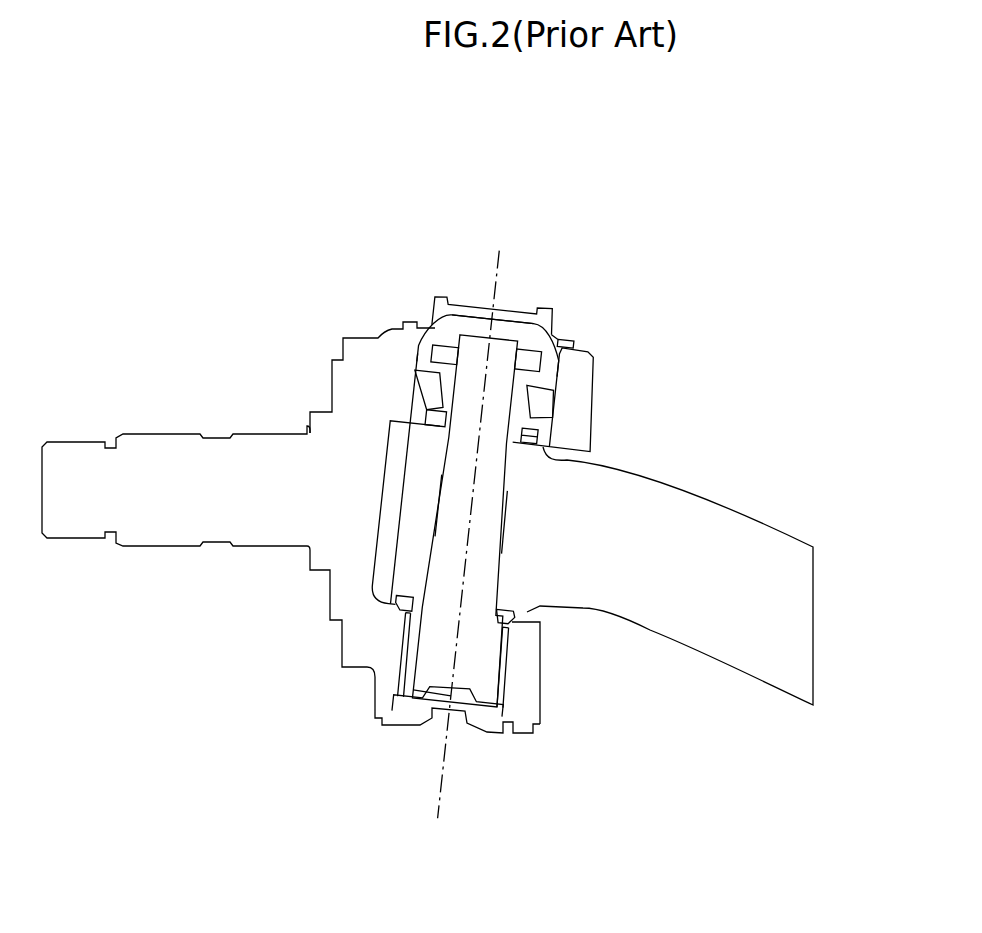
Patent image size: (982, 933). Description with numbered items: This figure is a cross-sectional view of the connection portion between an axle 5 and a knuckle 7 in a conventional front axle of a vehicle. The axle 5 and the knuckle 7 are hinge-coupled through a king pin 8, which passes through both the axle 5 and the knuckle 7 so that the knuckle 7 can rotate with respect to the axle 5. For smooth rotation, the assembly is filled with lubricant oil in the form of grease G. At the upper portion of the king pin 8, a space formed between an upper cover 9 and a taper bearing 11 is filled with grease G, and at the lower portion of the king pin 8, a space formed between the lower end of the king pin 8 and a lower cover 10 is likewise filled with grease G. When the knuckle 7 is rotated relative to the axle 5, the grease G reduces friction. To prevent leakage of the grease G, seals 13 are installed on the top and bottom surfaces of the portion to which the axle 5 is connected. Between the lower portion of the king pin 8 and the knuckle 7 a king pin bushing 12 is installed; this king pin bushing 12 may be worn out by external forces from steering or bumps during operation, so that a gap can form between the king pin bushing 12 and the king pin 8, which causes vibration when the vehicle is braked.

The axle 5 is at (718, 542).
The knuckle 7 is at (193, 478).
The king pin 8 is at (445, 555).
The upper cover 9 is at (518, 310).
The lower cover 10 is at (490, 723).
The taper bearing 11 is at (540, 402).
The king pin bushing 12 is at (507, 670).
The seals 13 is at (533, 432).
The grease G is at (467, 325).